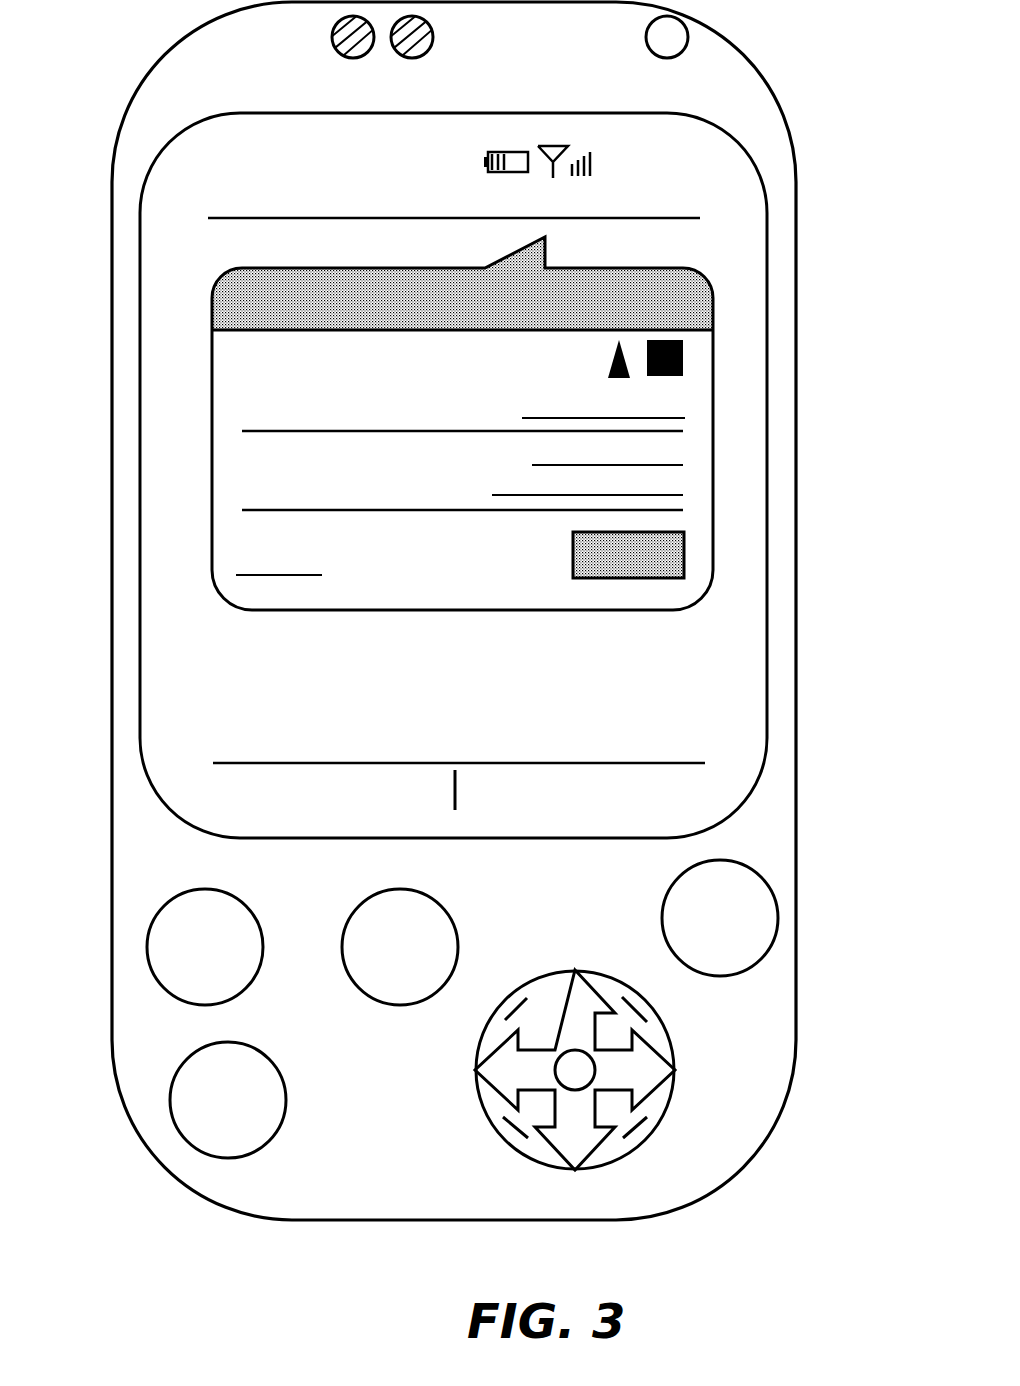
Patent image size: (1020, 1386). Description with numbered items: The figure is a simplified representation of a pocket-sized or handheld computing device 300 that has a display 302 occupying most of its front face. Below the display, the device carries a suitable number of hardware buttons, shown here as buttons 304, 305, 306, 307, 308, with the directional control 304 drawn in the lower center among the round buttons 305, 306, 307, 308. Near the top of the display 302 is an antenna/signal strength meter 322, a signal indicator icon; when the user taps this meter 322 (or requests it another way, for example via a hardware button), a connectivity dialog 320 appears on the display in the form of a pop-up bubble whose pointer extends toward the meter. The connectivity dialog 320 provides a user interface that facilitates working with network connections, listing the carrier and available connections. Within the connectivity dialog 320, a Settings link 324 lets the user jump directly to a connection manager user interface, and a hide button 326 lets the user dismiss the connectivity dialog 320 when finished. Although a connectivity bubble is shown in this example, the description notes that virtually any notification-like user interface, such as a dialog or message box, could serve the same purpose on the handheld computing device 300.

The handheld computing device 300 is at (806, 594).
The display 302 is at (778, 497).
The hardware button 304 is at (482, 1128).
The hardware button 305 is at (253, 1093).
The hardware button 306 is at (248, 938).
The hardware button 307 is at (405, 990).
The hardware button 308 is at (738, 962).
The connectivity dialog 320 is at (242, 407).
The antenna/signal strength meter 322 is at (630, 166).
The Settings link 324 is at (230, 546).
The hide button 326 is at (627, 586).